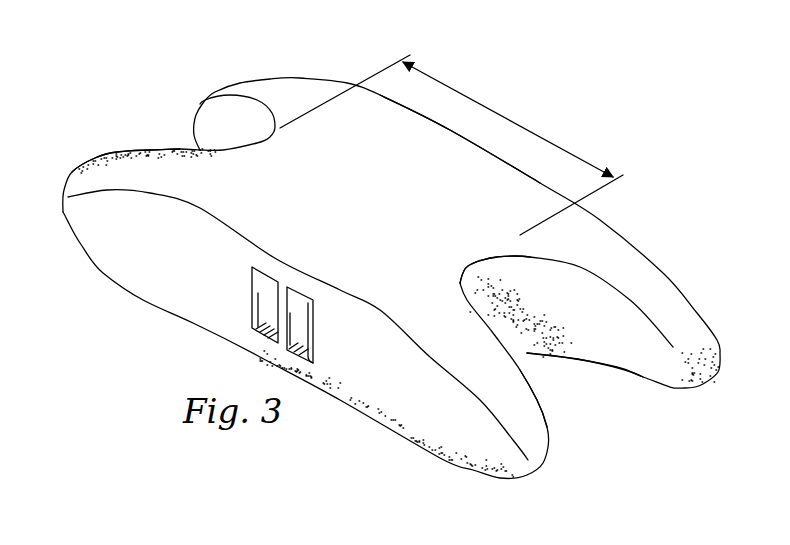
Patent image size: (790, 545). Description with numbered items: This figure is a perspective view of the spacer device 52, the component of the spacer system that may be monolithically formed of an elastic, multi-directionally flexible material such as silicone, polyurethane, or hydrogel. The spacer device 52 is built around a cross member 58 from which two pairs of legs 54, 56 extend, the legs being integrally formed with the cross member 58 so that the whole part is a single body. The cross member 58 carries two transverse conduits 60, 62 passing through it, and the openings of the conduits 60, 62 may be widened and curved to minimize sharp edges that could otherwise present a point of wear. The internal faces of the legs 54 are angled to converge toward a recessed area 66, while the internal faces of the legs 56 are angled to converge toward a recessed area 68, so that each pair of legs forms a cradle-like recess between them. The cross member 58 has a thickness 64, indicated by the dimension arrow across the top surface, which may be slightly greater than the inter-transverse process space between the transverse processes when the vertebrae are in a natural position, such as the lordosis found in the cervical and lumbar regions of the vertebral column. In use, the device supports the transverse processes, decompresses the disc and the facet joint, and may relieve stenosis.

The spacer device 52 is at (100, 312).
The legs 54 is at (645, 358).
The legs 56 is at (133, 152).
The cross member 58 is at (397, 190).
The transverse conduit 60 is at (260, 282).
The transverse conduit 62 is at (298, 308).
The thickness 64 is at (507, 120).
The recessed area 66 is at (477, 278).
The recessed area 68 is at (256, 140).